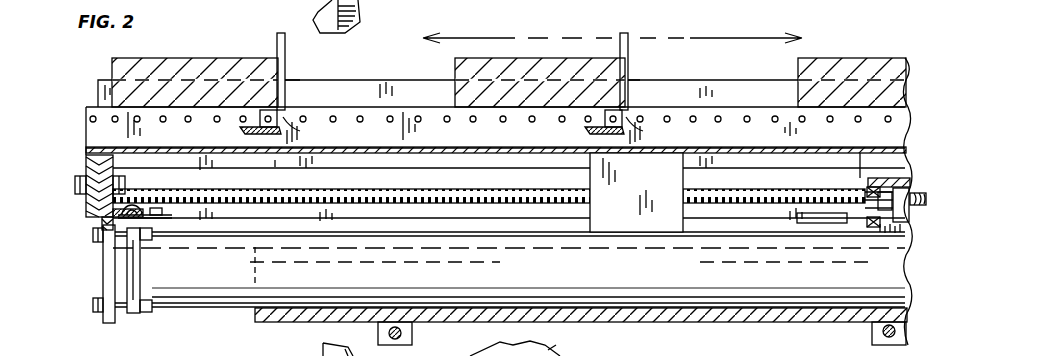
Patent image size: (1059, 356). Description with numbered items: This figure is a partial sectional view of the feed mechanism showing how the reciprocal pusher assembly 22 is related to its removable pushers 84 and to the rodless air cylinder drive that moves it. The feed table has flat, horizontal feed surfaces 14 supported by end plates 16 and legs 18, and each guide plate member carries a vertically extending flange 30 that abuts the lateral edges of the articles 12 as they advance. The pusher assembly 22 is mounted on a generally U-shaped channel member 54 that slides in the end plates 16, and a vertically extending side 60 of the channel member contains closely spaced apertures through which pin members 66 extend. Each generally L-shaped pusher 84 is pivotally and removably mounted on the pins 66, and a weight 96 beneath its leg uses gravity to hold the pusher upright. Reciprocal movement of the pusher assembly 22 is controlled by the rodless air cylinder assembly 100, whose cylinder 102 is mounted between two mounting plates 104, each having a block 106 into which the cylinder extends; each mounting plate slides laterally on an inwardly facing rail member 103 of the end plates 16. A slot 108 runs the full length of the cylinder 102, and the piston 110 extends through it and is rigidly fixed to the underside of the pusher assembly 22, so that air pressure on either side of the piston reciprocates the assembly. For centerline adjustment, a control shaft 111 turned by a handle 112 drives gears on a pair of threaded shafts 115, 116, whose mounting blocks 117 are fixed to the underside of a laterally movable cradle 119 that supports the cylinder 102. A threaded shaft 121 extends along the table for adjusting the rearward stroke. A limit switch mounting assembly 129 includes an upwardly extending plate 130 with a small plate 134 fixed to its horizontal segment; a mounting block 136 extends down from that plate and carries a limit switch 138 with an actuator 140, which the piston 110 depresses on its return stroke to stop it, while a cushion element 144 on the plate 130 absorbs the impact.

The articles 12 is at (208, 58).
The feed surfaces 14 is at (680, 102).
The end plates 16 is at (86, 209).
The legs 18 is at (362, 20).
The pusher assembly 22 is at (86, 122).
The vertically extending flange 30 is at (365, 80).
The U-shaped channel member 54 is at (86, 149).
The vertically extending side 60 is at (565, 352).
The pin members 66 is at (300, 131).
The pushers 84 is at (295, 66).
The weight 96 is at (243, 130).
The rodless air cylinder assembly 100 is at (201, 318).
The cylinder 102 is at (245, 305).
The rail member 103 is at (100, 222).
The mounting plates 104 is at (103, 270).
The block 106 is at (133, 315).
The slot 108 is at (256, 226).
The piston 110 is at (683, 178).
The control shaft 111 is at (540, 3).
The handle 112 is at (460, 2).
The threaded shaft 115 is at (398, 328).
The threaded shaft 116 is at (872, 330).
The mounting blocks 117 is at (412, 336).
The cradle 119 is at (303, 322).
The threaded shaft 121 is at (338, 188).
The limit switch mounting assembly 129 is at (812, 223).
The upwardly extending plate 130 is at (866, 225).
The small plate 134 is at (905, 180).
The mounting block 136 is at (910, 238).
The limit switch 138 is at (888, 224).
The actuator 140 is at (857, 187).
The cushion element 144 is at (860, 176).